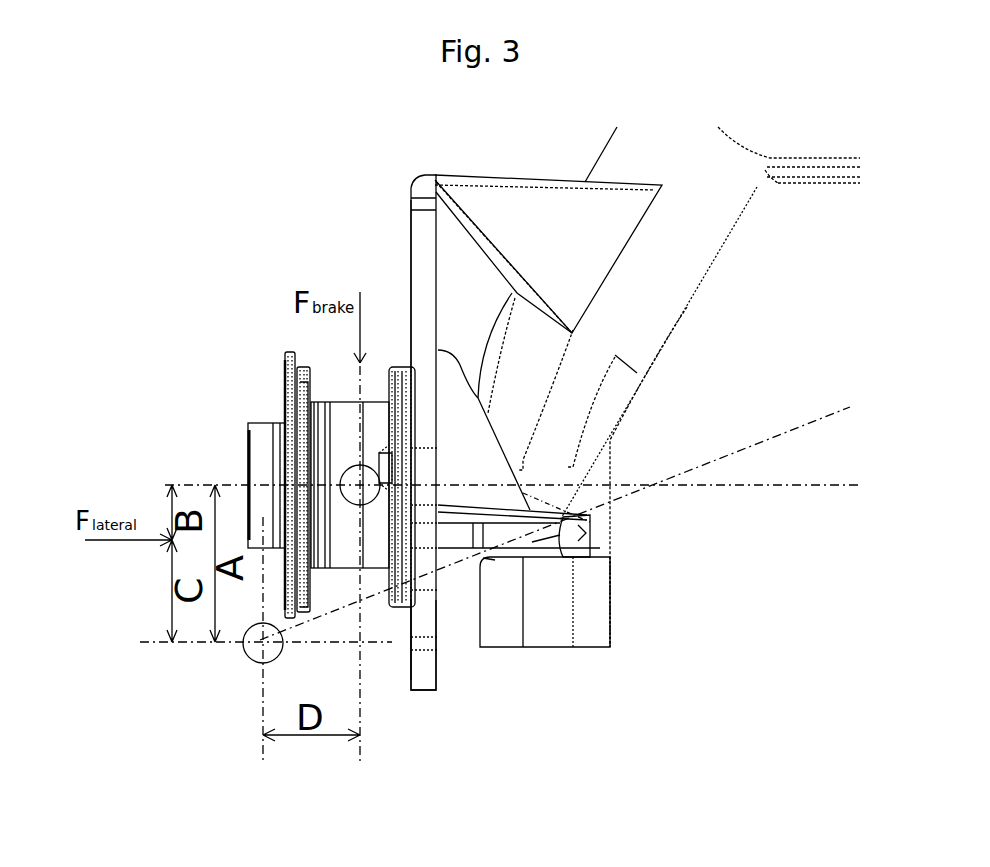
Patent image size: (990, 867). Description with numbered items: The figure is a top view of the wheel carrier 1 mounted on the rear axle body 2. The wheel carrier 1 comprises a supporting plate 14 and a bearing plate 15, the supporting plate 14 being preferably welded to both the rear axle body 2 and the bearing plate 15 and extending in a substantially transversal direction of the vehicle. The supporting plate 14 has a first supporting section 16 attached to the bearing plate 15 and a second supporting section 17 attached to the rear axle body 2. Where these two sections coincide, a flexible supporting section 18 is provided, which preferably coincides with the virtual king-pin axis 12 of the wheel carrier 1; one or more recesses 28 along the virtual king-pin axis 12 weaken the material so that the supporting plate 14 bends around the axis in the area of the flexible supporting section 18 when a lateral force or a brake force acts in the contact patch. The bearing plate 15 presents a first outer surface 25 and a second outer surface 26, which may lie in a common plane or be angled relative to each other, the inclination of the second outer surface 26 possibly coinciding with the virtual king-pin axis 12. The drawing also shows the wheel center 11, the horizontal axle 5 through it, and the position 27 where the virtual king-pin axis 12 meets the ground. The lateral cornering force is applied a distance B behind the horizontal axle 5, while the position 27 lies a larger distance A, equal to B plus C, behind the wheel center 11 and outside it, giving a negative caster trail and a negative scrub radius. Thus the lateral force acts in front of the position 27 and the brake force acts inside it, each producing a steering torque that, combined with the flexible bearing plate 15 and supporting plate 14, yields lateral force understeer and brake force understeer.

The wheel carrier 1 is at (213, 290).
The rear axle body 2 is at (738, 163).
The horizontal axle 5 is at (805, 485).
The wheel center 11 is at (360, 487).
The virtual king-pin axis 12 is at (818, 422).
The supporting plate 14 is at (580, 542).
The bearing plate 15 is at (425, 255).
The first supporting section 16 is at (453, 518).
The second supporting section 17 is at (567, 550).
The flexible supporting section 18 is at (532, 542).
The first outer surface 25 is at (411, 645).
The second outer surface 26 is at (410, 287).
The position where the virtual king-pin axis coincides with ground 27 is at (263, 643).
The recess 28 is at (563, 510).